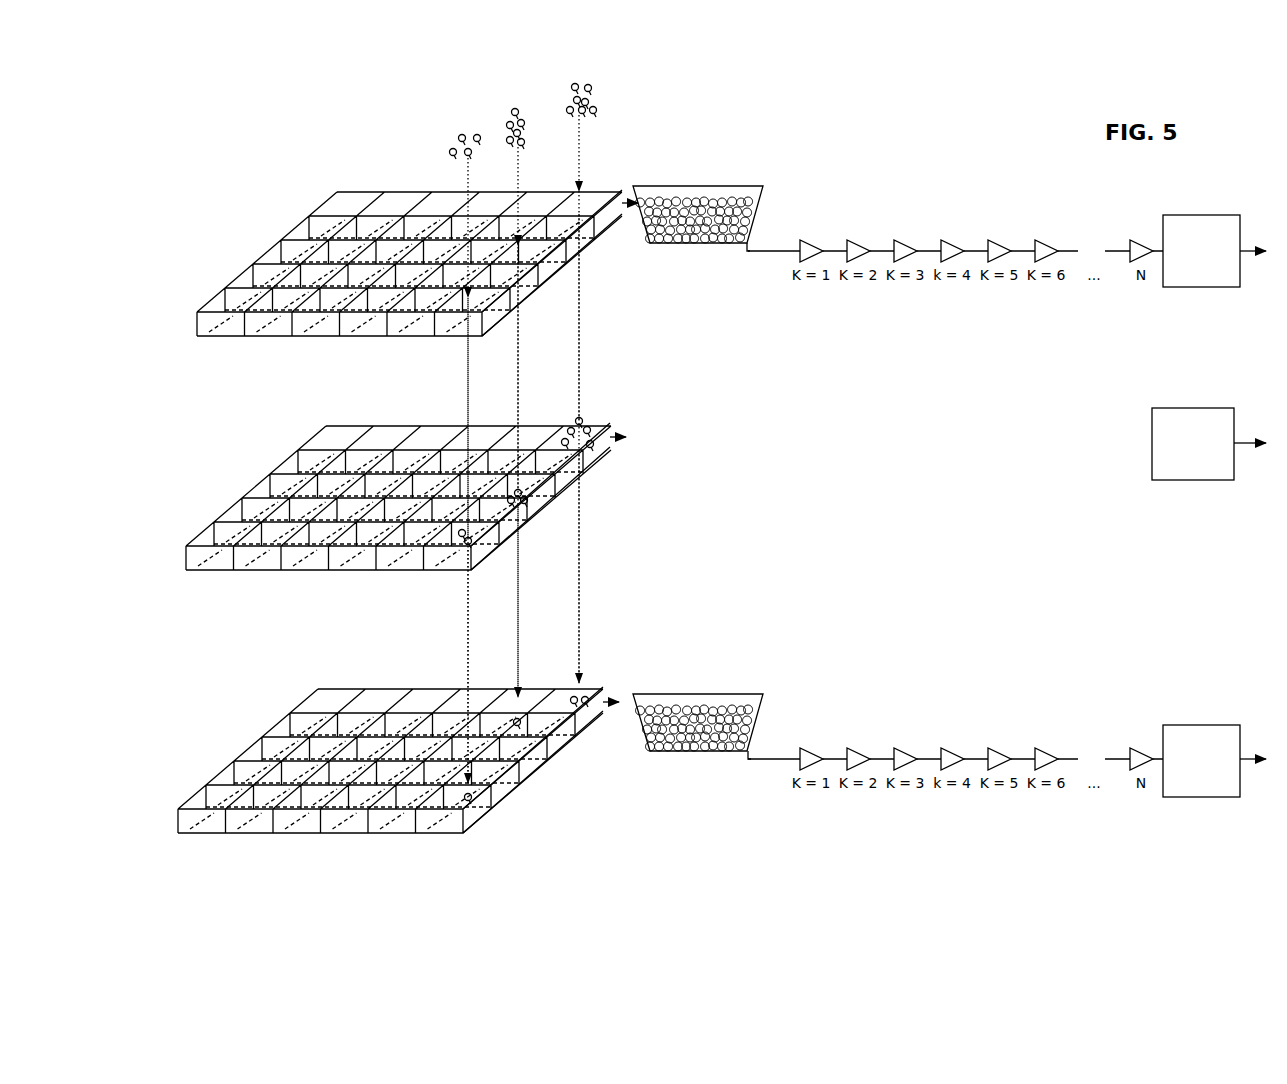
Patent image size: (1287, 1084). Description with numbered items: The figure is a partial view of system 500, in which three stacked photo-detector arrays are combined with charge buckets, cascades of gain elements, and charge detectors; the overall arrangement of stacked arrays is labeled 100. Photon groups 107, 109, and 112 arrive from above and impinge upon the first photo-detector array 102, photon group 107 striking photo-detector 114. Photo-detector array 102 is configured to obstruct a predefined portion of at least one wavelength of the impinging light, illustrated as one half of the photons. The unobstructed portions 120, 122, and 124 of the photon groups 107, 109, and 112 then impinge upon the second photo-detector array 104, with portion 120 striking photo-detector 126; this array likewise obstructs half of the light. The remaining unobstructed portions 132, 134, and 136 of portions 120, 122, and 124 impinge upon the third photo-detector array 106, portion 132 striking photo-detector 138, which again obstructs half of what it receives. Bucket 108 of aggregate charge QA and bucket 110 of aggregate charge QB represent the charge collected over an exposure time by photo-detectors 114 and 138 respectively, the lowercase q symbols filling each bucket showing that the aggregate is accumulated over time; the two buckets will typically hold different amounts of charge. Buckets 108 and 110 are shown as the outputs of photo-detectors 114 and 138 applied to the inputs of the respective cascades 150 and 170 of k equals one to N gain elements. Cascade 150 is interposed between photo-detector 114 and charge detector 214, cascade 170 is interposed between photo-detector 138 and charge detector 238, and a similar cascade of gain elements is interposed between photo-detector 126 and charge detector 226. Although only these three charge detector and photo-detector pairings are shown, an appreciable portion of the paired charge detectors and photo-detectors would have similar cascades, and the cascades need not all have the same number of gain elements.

The charge collecting structure 100 is at (408, 456).
The photo-detector array 102 is at (372, 204).
The photo-detector array 104 is at (340, 459).
The photo-detector array 106 is at (348, 703).
The photon group 107 is at (613, 82).
The bucket of aggregate charge QA 108 is at (787, 212).
The photon group 109 is at (546, 96).
The bucket of aggregate charge QB 110 is at (811, 606).
The photon group 112 is at (479, 116).
The photo-detector 114 is at (611, 240).
The unobstructed portion 120 is at (555, 371).
The unobstructed portion 122 is at (497, 401).
The unobstructed portion 124 is at (437, 406).
The photo-detector 126 is at (601, 472).
The unobstructed portion 132 is at (553, 631).
The unobstructed portion 134 is at (500, 651).
The unobstructed portion 136 is at (437, 651).
The photo-detector 138 is at (593, 737).
The cascade of gain elements 150 is at (889, 304).
The cascade of gain elements 170 is at (984, 673).
The charge detector 214 is at (1214, 251).
The charge detector 226 is at (1209, 444).
The charge detector 238 is at (1214, 761).
The system 500 is at (970, 142).